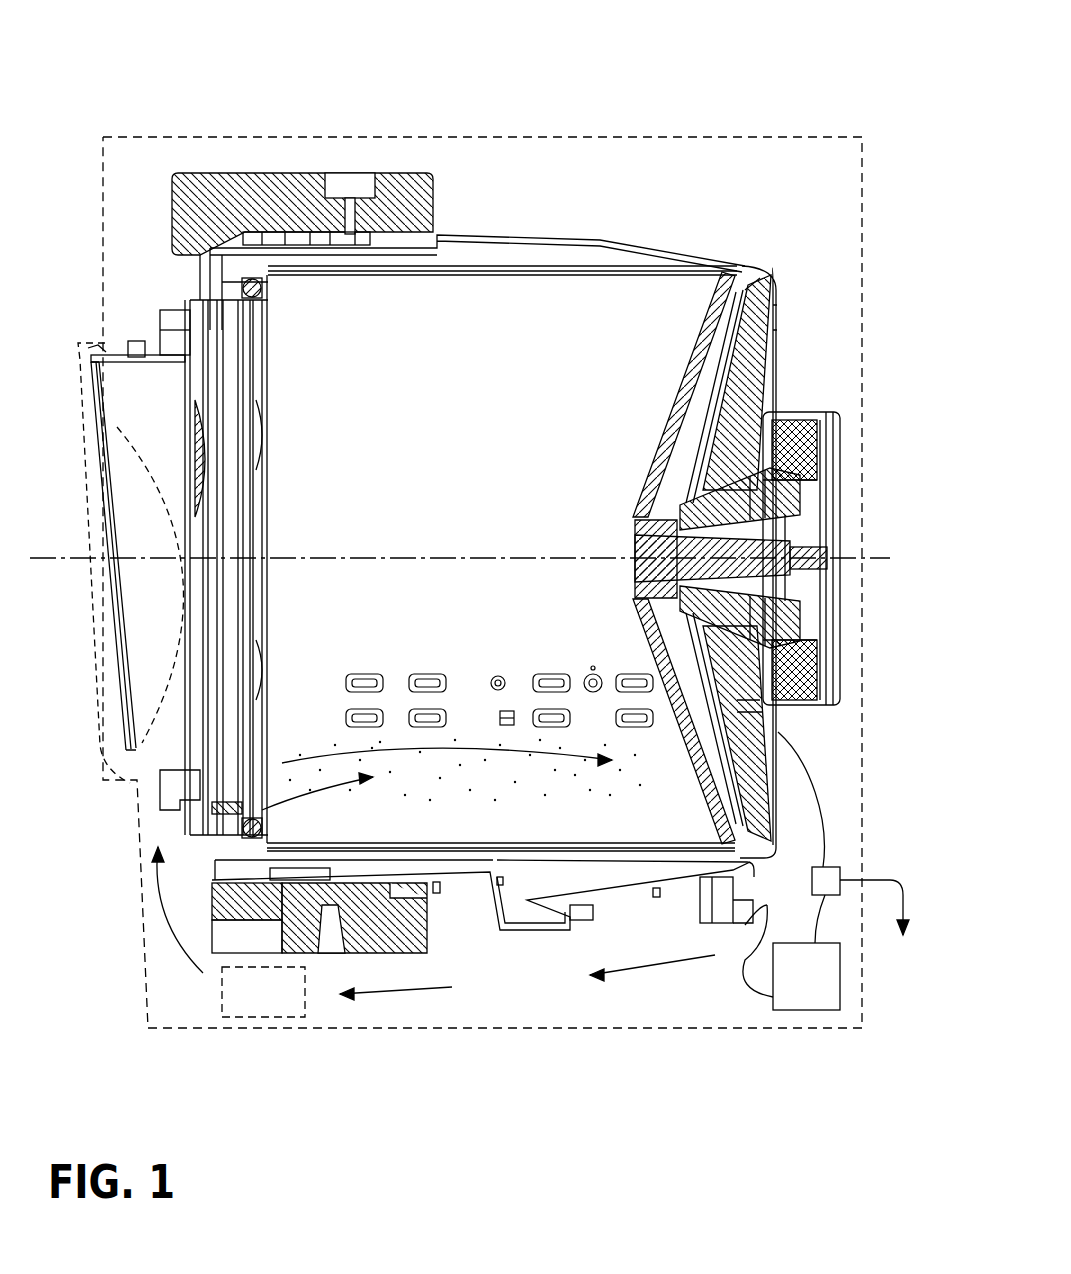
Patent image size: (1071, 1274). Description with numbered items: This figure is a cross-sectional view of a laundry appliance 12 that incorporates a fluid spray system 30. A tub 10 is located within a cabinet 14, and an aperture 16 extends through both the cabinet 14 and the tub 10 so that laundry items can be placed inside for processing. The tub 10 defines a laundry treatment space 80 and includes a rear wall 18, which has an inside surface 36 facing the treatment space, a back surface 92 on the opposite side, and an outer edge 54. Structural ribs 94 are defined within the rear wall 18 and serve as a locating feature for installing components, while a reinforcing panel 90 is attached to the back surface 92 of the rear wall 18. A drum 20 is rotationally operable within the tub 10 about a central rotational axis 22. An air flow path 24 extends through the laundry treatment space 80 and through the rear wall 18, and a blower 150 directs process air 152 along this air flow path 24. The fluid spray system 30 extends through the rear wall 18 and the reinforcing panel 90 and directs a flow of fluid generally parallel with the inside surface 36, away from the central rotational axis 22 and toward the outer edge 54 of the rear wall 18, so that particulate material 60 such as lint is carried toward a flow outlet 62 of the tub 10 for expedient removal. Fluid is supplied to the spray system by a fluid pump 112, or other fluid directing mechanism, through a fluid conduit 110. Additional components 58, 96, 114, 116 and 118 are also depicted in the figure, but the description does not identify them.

The tub 10 is at (552, 230).
The laundry appliance 12 is at (198, 90).
The cabinet 14 is at (690, 137).
The aperture 16 is at (183, 565).
The rear wall 18 is at (775, 355).
The drum 20 is at (680, 263).
The central rotational axis 22 is at (876, 556).
The air flow path 24 is at (150, 905).
The fluid spray system 30 is at (785, 1010).
The inside surface 36 is at (851, 552).
The outer edge 54 is at (733, 835).
The stator 58 is at (826, 452).
The particulate material 60 is at (245, 808).
The flow outlet 62 is at (723, 927).
The laundry treatment space 80 is at (458, 310).
The reinforcing panel 90 is at (775, 318).
The back surface 92 is at (763, 727).
The structural ribs 94 is at (778, 292).
The rotor 96 is at (837, 663).
The fluid conduit 110 is at (828, 862).
The fluid pump 112 is at (810, 985).
The wire 114 is at (830, 895).
The fastener 116 is at (345, 170).
The air outlet 118 is at (895, 890).
The blower 150 is at (270, 1020).
The process air 152 is at (175, 940).